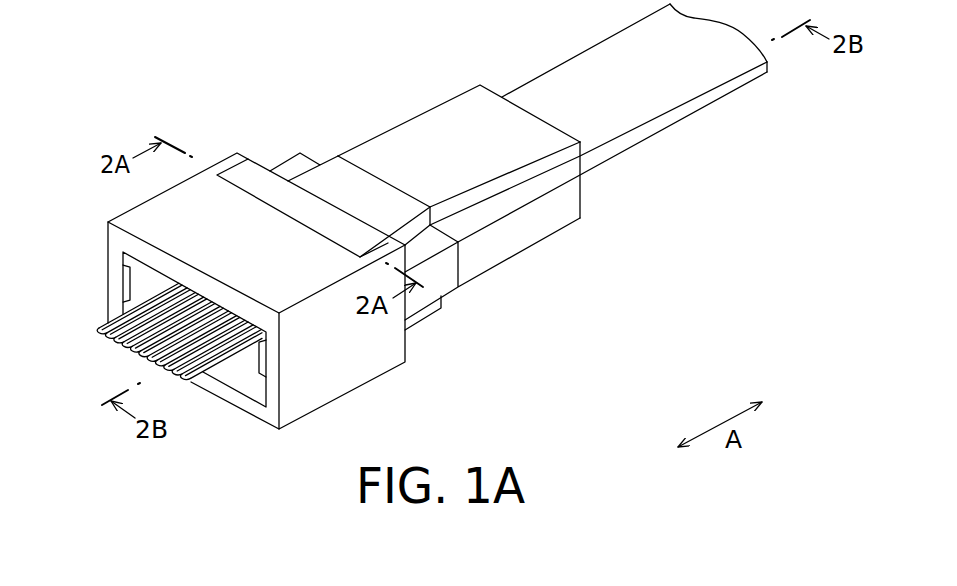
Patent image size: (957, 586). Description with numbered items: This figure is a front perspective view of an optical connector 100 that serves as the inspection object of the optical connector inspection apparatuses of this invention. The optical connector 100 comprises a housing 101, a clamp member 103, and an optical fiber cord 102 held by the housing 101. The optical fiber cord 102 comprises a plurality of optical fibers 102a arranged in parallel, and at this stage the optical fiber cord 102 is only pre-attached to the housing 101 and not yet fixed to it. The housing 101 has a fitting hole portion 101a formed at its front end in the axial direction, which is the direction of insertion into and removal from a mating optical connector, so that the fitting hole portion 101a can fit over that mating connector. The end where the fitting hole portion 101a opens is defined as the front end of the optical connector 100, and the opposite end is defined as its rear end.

The optical connector 100 is at (376, 111).
The housing 101 is at (302, 313).
The fitting hole portion 101a is at (243, 373).
The optical fiber cord 102 is at (624, 92).
The optical fibers 102a is at (153, 328).
The clamp member 103 is at (338, 177).